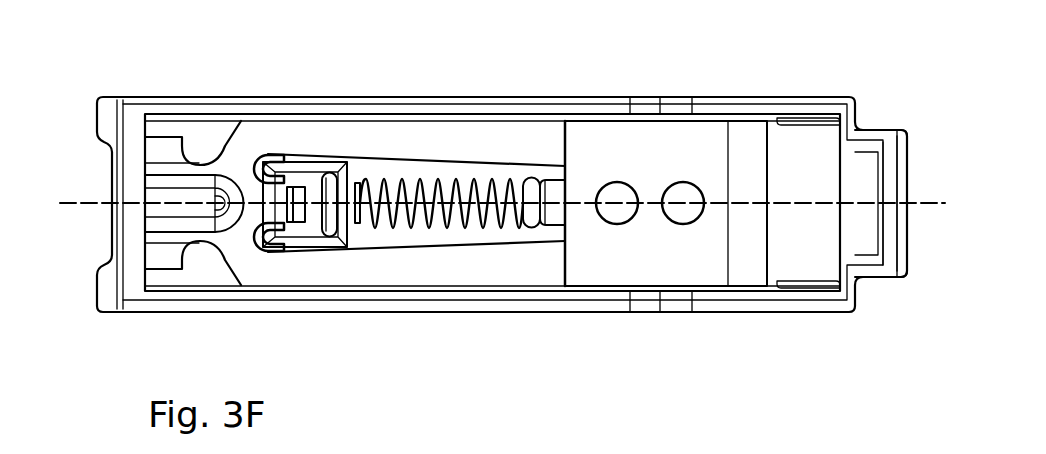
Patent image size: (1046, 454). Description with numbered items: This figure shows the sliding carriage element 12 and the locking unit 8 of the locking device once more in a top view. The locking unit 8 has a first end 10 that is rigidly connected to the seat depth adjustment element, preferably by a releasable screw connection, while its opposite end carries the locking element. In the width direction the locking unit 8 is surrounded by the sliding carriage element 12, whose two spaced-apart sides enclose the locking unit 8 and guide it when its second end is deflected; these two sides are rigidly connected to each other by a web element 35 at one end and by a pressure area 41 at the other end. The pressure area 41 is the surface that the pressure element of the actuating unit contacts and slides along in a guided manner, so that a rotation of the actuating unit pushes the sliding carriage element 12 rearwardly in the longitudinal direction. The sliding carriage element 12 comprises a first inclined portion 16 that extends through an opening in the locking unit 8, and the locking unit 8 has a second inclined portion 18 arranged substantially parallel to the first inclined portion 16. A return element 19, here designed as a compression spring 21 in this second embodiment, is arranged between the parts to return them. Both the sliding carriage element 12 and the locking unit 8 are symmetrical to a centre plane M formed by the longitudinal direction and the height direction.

The sliding carriage element 12 is at (189, 97).
The web element 35 is at (112, 273).
The first inclined portion 16 is at (332, 225).
The second inclined portion 18 is at (278, 213).
The return element 19 is at (406, 185).
The compression spring 21 is at (437, 138).
The locking unit 8 is at (544, 260).
The first end 10 is at (680, 257).
The pressure area 41 is at (908, 263).
The centre plane M is at (937, 201).